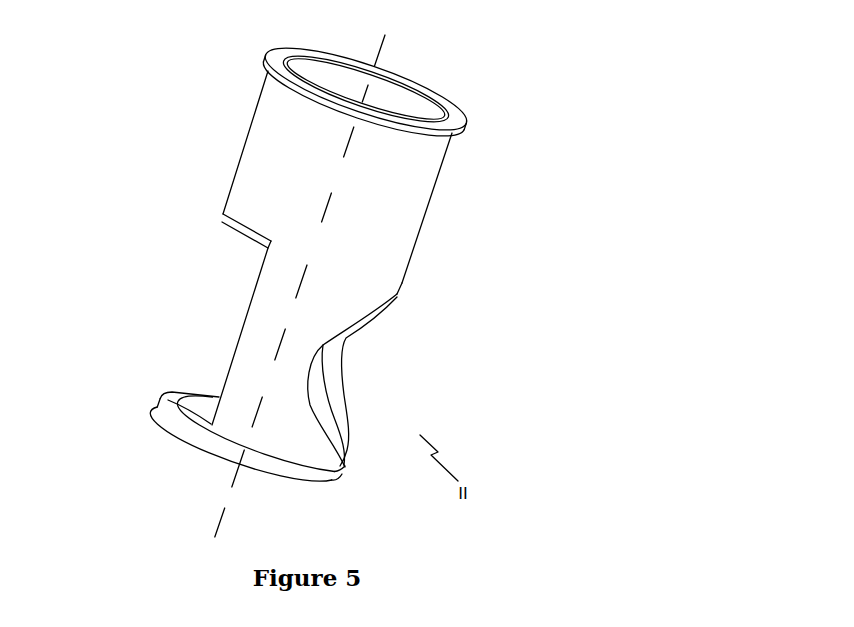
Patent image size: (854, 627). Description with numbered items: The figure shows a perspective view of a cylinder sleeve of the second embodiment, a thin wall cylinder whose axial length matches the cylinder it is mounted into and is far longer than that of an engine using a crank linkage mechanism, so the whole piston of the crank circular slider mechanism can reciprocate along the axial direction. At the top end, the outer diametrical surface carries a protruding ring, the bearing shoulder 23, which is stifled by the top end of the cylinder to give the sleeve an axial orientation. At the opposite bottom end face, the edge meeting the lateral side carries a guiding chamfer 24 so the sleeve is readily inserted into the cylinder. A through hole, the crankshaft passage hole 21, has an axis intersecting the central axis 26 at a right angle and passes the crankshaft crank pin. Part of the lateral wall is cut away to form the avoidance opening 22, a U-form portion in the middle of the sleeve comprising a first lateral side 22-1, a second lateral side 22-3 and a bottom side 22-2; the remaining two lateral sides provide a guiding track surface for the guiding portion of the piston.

The crankshaft passage hole 21 is at (351, 340).
The avoidance opening 22 is at (242, 299).
The first lateral side 22-1 is at (222, 218).
The bottom side 22-2 is at (235, 338).
The second lateral side 22-3 is at (161, 385).
The bearing shoulder 23 is at (458, 107).
The guiding chamfer 24 is at (348, 457).
The central axis 26 is at (222, 509).